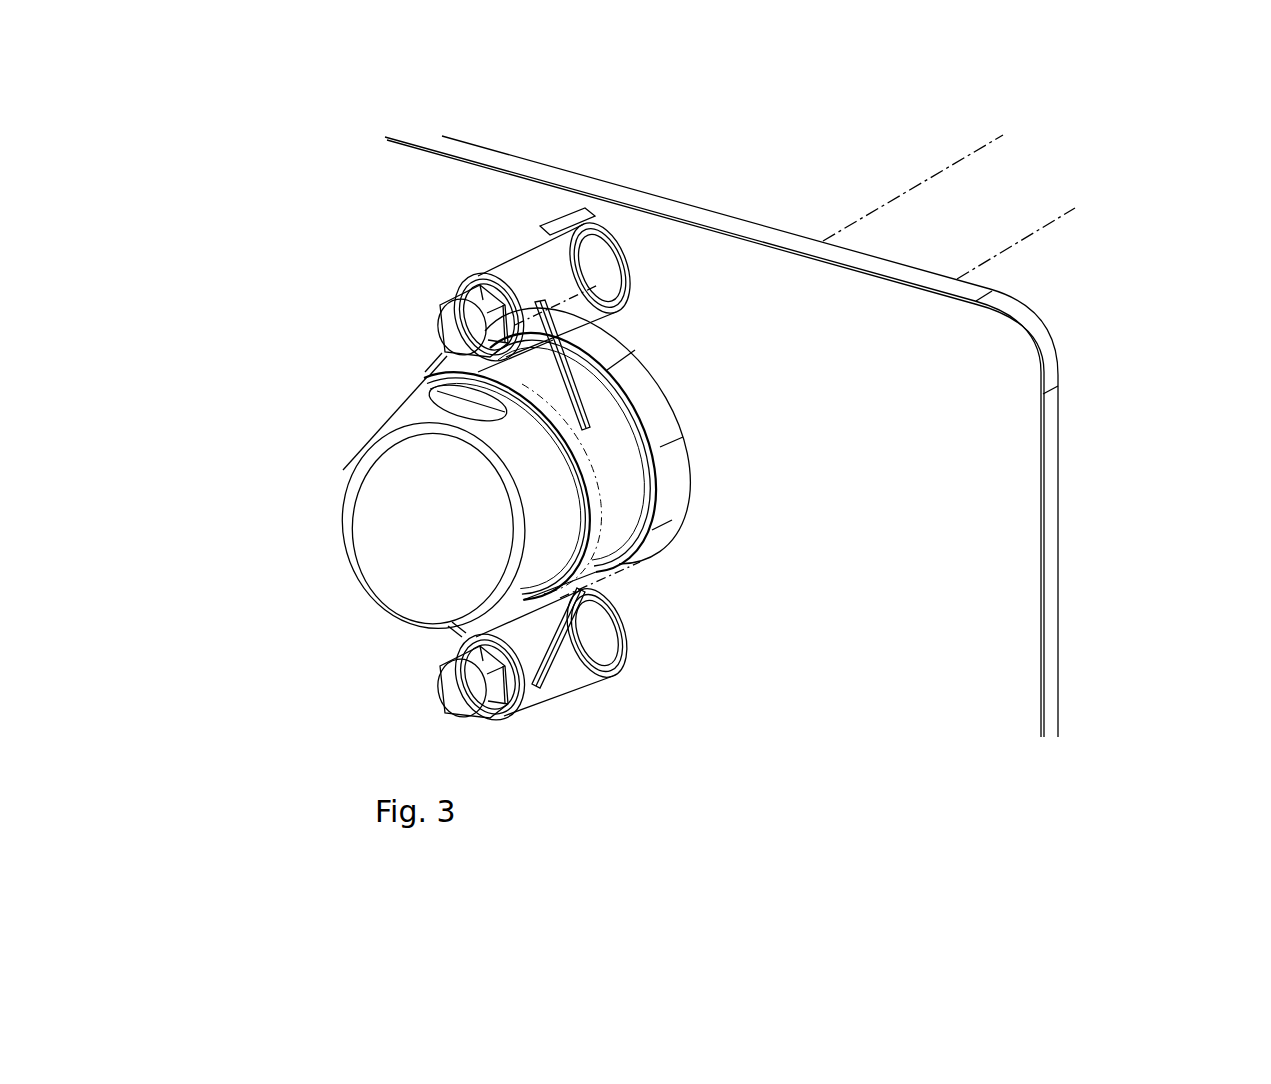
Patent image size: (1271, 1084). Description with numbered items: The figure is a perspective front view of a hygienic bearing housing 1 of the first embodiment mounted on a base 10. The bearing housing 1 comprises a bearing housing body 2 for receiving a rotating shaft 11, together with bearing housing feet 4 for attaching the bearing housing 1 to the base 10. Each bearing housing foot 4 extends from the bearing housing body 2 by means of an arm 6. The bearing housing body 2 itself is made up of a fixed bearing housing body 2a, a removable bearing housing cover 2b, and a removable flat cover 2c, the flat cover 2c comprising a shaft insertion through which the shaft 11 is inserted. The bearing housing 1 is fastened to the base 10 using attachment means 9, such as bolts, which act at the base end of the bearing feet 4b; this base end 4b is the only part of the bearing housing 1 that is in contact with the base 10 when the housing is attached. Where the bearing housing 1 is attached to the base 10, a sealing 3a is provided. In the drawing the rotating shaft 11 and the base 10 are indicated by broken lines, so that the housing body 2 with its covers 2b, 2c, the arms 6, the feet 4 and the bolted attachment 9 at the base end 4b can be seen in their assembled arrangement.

The hygienic bearing housing 1 is at (224, 93).
The bearing housing body 2 is at (620, 512).
The fixed bearing housing body 2a is at (610, 418).
The removable bearing housing cover 2b is at (547, 508).
The removable flat cover 2c is at (657, 463).
The sealing 3a is at (620, 248).
The bearing housing foot 4 is at (532, 268).
The base end of the bearing feet 4b is at (543, 217).
The arm 6 is at (450, 353).
The attachment means 9 is at (453, 320).
The base 10 is at (937, 363).
The rotating shaft 11 is at (993, 212).